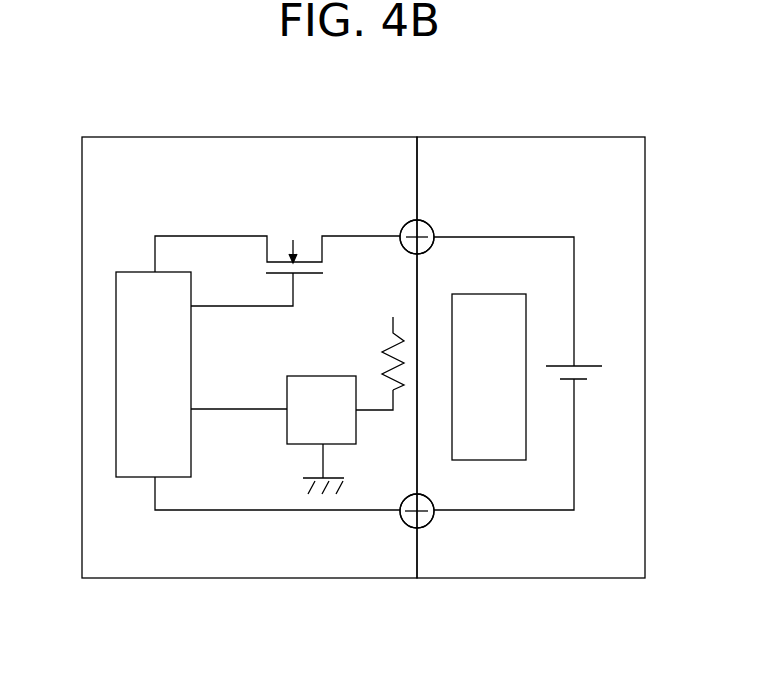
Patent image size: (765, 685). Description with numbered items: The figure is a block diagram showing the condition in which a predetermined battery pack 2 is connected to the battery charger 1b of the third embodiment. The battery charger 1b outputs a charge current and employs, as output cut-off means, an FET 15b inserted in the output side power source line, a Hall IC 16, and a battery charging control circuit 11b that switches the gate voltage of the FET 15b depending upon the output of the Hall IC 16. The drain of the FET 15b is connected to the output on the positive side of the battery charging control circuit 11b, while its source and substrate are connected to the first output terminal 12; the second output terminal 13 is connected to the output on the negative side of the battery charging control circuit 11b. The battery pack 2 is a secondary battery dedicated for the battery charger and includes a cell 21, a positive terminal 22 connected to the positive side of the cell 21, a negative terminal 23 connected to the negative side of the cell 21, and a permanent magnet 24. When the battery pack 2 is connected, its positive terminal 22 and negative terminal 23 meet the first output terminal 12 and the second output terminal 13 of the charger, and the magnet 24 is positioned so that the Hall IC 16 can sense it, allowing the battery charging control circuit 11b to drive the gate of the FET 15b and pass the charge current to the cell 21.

The battery charger 1b is at (163, 137).
The battery pack 2 is at (455, 137).
The battery charging control circuit 11b is at (130, 272).
The first output terminal 12 is at (403, 249).
The second output terminal 13 is at (404, 525).
The FET 15b is at (298, 232).
The Hall IC 16 is at (287, 376).
The cell 21 is at (583, 366).
The positive terminal 22 is at (433, 228).
The negative terminal 23 is at (430, 525).
The magnet 24 is at (478, 294).